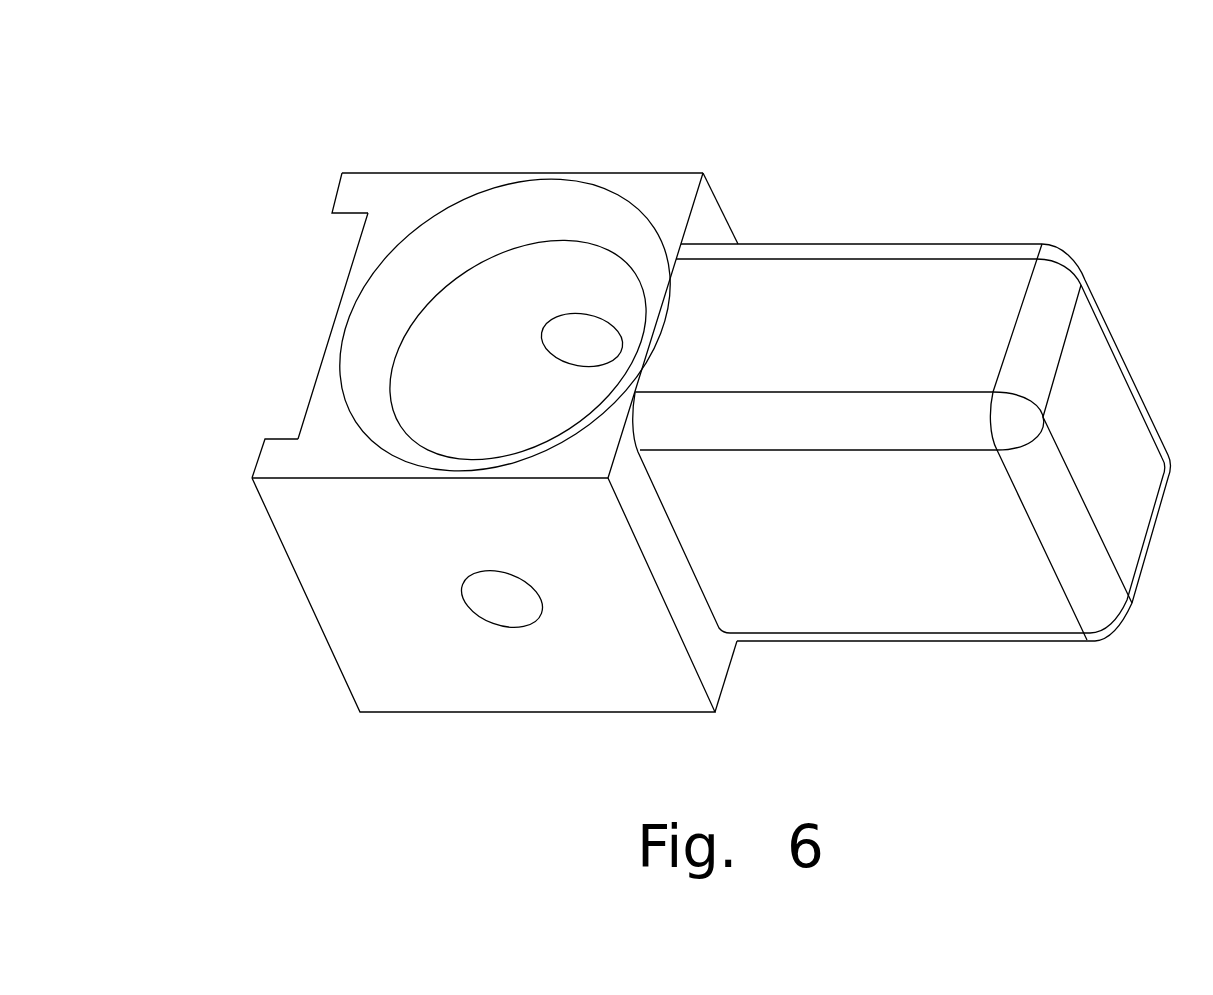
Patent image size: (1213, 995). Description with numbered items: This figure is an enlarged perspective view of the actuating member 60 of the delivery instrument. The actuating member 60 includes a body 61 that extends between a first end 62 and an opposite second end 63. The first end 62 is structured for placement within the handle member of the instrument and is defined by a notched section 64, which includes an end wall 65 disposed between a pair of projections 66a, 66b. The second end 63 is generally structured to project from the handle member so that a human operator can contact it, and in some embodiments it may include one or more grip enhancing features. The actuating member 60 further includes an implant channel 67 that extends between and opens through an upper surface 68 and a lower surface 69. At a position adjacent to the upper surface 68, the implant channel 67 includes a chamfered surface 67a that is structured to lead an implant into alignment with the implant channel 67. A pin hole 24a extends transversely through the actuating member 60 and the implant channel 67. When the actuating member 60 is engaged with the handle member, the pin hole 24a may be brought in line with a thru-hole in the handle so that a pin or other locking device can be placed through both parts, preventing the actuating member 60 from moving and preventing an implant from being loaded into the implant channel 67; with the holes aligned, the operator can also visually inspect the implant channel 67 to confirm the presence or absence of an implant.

The actuating member 60 is at (692, 404).
The body 61 is at (918, 414).
The first end 62 is at (313, 612).
The second end 63 is at (1110, 390).
The notched section 64 is at (466, 432).
The end wall 65 is at (331, 333).
The projection 66a is at (337, 193).
The projection 66b is at (257, 462).
The implant channel 67 is at (542, 267).
The chamfered surface 67a is at (512, 210).
The upper surface 68 is at (422, 183).
The lower surface 69 is at (697, 714).
The pin hole 24a is at (592, 330).